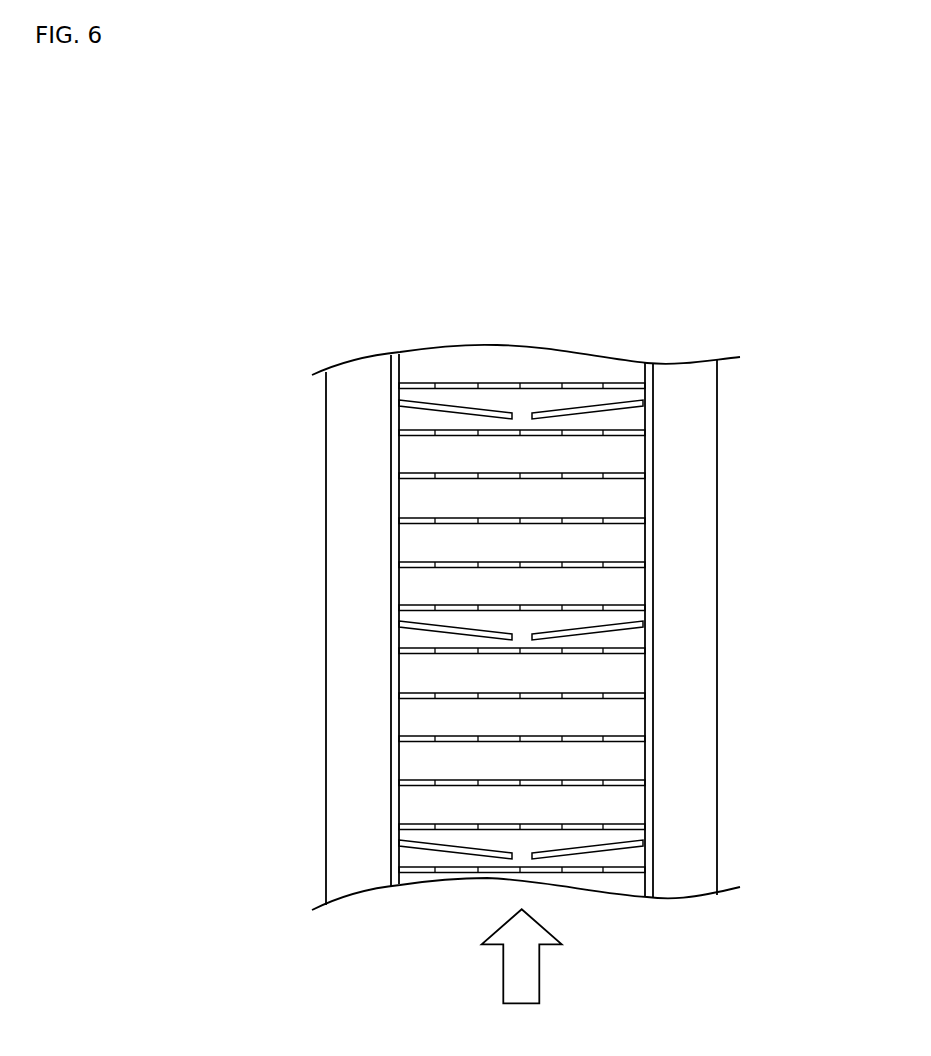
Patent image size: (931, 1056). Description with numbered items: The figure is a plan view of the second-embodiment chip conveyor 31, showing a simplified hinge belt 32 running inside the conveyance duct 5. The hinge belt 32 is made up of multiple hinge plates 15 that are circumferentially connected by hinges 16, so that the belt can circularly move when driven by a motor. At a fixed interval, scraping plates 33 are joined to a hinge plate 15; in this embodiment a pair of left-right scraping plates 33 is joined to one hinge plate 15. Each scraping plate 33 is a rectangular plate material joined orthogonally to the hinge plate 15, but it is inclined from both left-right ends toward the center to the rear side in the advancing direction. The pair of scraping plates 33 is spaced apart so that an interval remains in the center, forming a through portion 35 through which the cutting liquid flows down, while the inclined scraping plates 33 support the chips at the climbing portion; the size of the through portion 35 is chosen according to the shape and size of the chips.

The conveyance duct 5 is at (717, 797).
The hinge plate 15 is at (410, 457).
The hinge 16 is at (457, 478).
The chip conveyor 31 is at (507, 337).
The hinge belt 32 is at (653, 520).
The scraping plate 33 is at (450, 633).
The through portion 35 is at (522, 636).